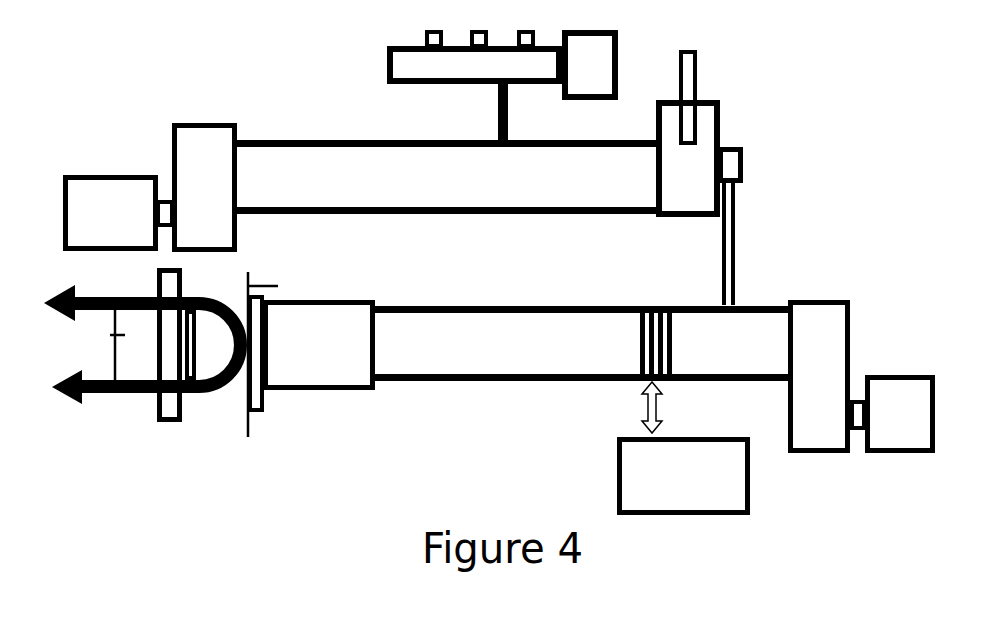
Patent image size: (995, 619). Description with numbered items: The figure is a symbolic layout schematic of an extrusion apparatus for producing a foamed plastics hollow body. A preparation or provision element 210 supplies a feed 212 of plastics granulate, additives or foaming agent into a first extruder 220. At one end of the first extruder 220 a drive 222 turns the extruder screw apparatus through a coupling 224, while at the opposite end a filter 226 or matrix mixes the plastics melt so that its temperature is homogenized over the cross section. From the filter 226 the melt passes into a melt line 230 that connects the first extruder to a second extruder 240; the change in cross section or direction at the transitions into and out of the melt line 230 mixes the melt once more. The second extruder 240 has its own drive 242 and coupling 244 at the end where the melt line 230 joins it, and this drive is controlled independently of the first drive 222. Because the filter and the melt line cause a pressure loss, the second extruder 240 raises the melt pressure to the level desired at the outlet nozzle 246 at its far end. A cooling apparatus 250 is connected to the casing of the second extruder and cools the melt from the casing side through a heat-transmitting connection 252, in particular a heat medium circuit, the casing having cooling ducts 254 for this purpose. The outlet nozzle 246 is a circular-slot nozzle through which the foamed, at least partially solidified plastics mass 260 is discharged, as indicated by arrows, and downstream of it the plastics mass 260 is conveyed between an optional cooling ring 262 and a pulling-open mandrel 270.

The preparation or provision element 210 is at (618, 36).
The feed 212 is at (510, 113).
The first extruder 220 is at (480, 205).
The drive 222 is at (133, 168).
The coupling 224 is at (212, 116).
The filter 226 is at (688, 208).
The melt line 230 is at (740, 222).
The second extruder 240 is at (513, 380).
The drive 242 is at (896, 447).
The coupling 244 is at (818, 447).
The outlet nozzle 246 is at (268, 388).
The cooling apparatus 250 is at (753, 492).
The heat-transmitting connection 252 is at (660, 398).
The cooling ducts 254 is at (674, 343).
The plastics mass 260 is at (95, 398).
The cooling ring 262 is at (172, 422).
The pulling-open mandrel 270 is at (112, 335).